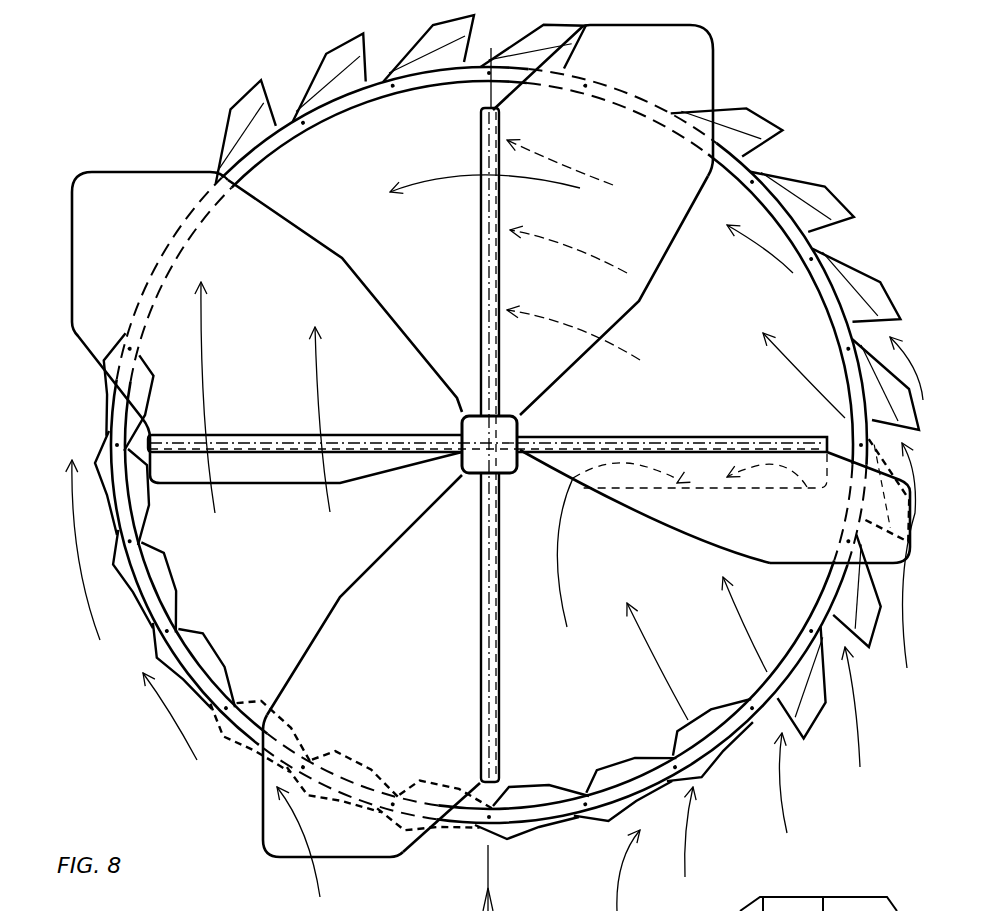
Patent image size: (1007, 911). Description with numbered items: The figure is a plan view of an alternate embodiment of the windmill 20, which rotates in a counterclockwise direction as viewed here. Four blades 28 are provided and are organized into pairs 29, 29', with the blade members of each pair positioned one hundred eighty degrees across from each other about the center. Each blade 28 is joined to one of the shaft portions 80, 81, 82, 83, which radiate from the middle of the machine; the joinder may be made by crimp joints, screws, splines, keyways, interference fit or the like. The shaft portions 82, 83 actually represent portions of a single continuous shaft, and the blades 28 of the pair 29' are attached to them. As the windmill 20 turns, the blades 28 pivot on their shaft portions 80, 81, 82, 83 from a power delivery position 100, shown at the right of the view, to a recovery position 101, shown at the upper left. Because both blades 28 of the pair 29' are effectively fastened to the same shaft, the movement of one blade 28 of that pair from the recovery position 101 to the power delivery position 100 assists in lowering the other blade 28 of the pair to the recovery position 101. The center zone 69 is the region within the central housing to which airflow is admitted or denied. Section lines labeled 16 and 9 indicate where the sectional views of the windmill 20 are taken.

The windmill 20 is at (220, 92).
The blade 28 is at (270, 242).
The blade pair 29 is at (480, 441).
The blade pair 29' is at (421, 347).
The center zone 69 is at (312, 559).
The shaft portion 80 is at (498, 656).
The shaft portion 81 is at (481, 221).
The shaft portion 82 is at (403, 444).
The shaft portion 83 is at (610, 443).
The power delivery position 100 is at (797, 534).
The recovery position 101 is at (282, 346).
The section line 16- 16 is at (558, 18).
The section line 9- 9 is at (62, 808).